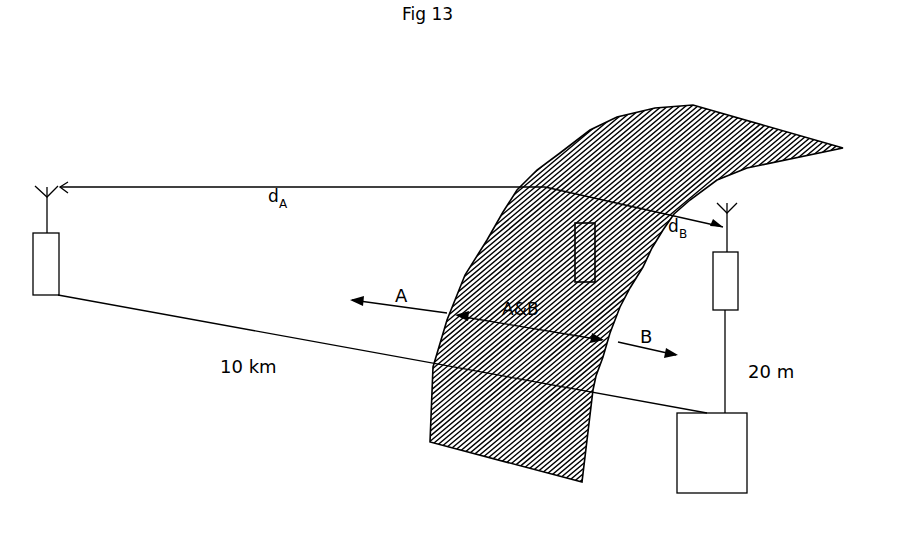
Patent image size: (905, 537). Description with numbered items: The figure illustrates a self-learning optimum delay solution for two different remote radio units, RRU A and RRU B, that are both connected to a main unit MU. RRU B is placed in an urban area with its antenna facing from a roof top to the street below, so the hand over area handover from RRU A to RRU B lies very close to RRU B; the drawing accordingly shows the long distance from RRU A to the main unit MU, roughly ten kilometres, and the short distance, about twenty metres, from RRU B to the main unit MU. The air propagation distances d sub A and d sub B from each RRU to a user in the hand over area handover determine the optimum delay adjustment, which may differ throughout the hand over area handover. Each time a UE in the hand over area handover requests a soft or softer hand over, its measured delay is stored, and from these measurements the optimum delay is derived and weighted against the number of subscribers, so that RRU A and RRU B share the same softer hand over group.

The RRU A is at (46, 240).
The RRU B is at (725, 256).
The main unit MU is at (712, 453).
The hand over area handover is at (570, 163).